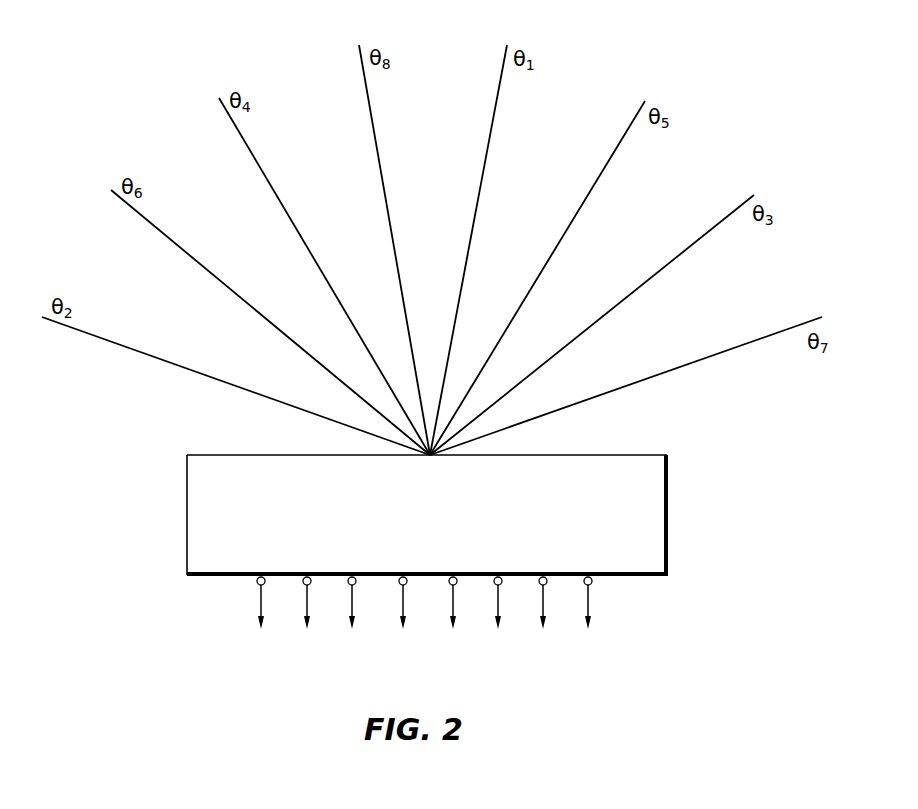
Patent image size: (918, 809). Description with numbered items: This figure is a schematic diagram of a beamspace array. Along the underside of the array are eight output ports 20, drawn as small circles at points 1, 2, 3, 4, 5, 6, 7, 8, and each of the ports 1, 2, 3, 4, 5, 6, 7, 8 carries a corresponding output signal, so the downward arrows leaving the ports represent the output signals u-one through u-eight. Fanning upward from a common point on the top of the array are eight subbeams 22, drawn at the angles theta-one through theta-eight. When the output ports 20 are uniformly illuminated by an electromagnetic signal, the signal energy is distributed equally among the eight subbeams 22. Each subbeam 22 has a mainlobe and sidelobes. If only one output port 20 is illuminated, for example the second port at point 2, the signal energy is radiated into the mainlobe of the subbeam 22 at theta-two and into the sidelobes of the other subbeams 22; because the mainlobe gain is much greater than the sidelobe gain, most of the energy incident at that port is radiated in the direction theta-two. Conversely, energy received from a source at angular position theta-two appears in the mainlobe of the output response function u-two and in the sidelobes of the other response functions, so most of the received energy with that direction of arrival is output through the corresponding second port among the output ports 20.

The output ports 20 is at (427, 555).
The subbeams 22 is at (373, 106).
The receiving point P1 with output u1 1 is at (259, 602).
The receiving point P2 with output u2 2 is at (305, 602).
The receiving point P3 with output u3 3 is at (350, 602).
The receiving point P4 with output u4 4 is at (401, 602).
The receiving point P5 with output u5 5 is at (451, 602).
The receiving point P6 with output u6 6 is at (496, 602).
The receiving point P7 with output u7 7 is at (541, 602).
The receiving point P8 with output u8 8 is at (607, 595).